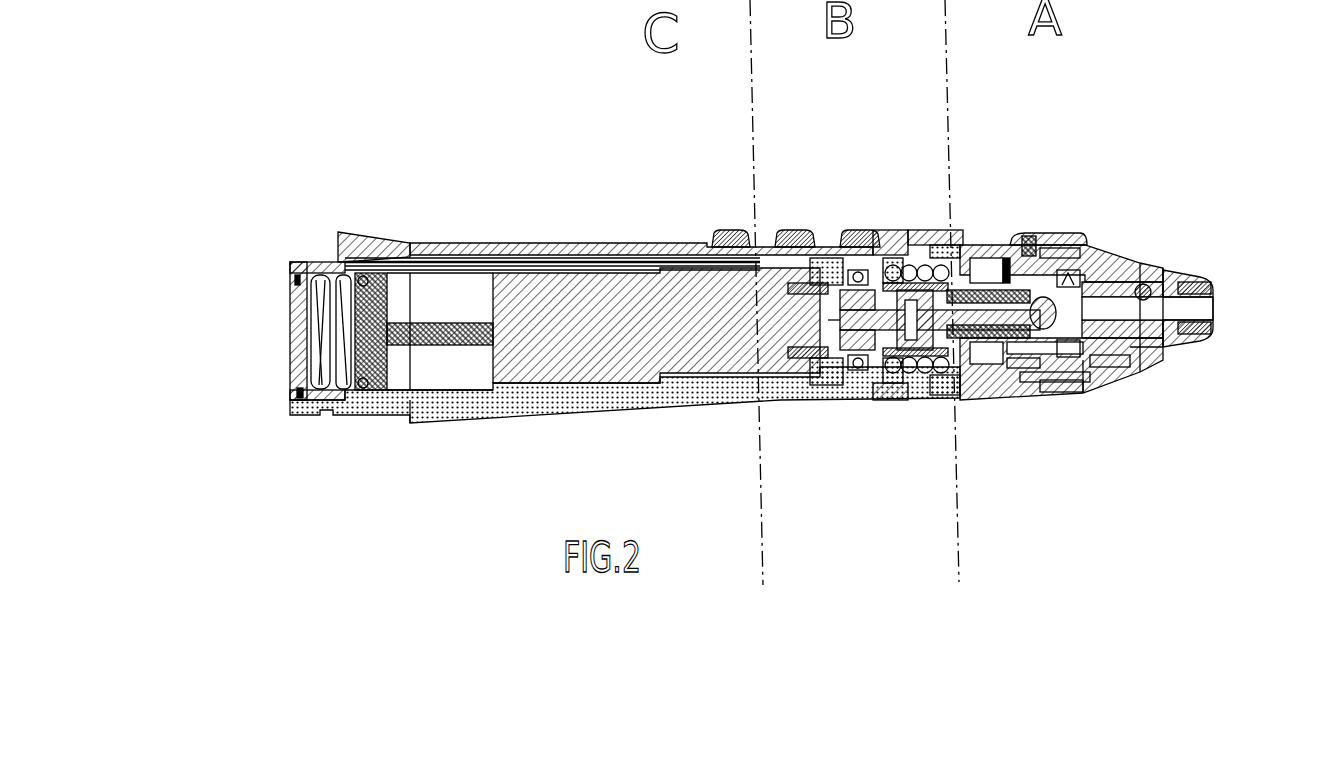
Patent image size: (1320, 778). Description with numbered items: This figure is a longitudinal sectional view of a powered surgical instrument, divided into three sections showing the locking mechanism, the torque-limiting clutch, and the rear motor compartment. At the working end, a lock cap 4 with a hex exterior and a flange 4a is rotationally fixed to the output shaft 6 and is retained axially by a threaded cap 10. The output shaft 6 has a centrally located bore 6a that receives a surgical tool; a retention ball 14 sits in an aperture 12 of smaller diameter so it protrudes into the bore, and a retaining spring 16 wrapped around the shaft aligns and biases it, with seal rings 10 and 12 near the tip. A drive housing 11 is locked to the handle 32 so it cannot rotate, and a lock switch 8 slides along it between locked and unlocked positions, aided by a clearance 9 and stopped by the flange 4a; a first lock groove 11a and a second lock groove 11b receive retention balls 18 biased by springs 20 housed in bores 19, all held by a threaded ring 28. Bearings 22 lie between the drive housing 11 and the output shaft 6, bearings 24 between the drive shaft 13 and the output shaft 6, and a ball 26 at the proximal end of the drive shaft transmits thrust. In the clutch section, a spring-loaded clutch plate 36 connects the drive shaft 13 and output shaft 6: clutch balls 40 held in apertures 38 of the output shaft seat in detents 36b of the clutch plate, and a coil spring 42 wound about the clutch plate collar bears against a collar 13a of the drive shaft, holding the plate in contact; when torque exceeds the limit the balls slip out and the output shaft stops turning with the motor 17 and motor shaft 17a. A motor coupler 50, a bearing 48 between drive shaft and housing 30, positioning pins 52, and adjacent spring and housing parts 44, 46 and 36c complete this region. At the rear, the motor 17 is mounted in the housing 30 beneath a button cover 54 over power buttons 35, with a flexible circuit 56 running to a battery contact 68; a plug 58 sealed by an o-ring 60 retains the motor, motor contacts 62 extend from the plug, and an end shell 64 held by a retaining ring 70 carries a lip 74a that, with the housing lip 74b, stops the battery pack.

The lock cap 4 is at (1218, 262).
The flange 4a is at (1161, 266).
The output shaft 6 is at (1115, 268).
The centrally located bore 6a is at (1198, 302).
The lock switch 8 is at (1120, 370).
The clearance 9 is at (1148, 355).
The threaded cap 10 is at (1205, 333).
The drive housing 11 is at (1032, 400).
The first lock groove 11a is at (1037, 248).
The second lock groove 11b is at (1070, 262).
The aperture 12 is at (1185, 350).
The drive shaft 13 is at (917, 250).
The collar 13a is at (890, 400).
The retention ball 14 is at (1170, 268).
The retaining spring 16 is at (1140, 265).
The motor 17 is at (675, 340).
The motor shaft 17a is at (830, 403).
The retention ball 18 is at (1031, 250).
The bore 19 is at (1025, 250).
The biasing spring 20 is at (1027, 250).
The bearing 22 is at (1096, 385).
The bearing 24 is at (978, 250).
The ball 26 is at (1060, 400).
The threaded ring 28 is at (1050, 392).
The housing 30 is at (600, 243).
The handle 32 is at (560, 405).
The power button 35 is at (783, 248).
The clutch plate 36 is at (946, 400).
The detent 36b is at (950, 400).
The valve housing flange 36c is at (937, 400).
The aperture 38 is at (958, 250).
The clutch ball 40 is at (956, 250).
The coil spring 42 is at (877, 250).
The spring 44 is at (931, 250).
The spring housing 46 is at (888, 250).
The bearing 48 is at (858, 400).
The motor coupler 50 is at (848, 400).
The positioning pin 52 is at (812, 250).
The button cover 54 is at (652, 248).
The flexible circuit 56 is at (565, 253).
The plug 58 is at (393, 262).
The o-ring 60 is at (360, 393).
The motor contact 62 is at (345, 335).
The end shell 64 is at (290, 330).
The battery contact 68 is at (312, 300).
The retaining ring 70 is at (300, 398).
The lip 74a is at (336, 247).
The lip 74b is at (405, 425).